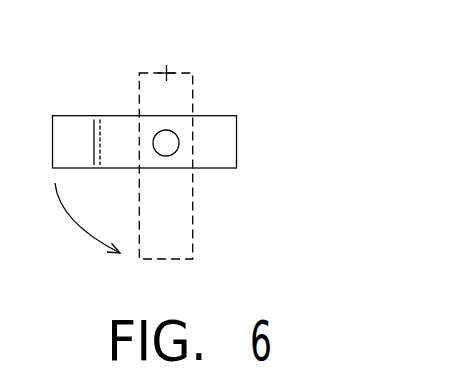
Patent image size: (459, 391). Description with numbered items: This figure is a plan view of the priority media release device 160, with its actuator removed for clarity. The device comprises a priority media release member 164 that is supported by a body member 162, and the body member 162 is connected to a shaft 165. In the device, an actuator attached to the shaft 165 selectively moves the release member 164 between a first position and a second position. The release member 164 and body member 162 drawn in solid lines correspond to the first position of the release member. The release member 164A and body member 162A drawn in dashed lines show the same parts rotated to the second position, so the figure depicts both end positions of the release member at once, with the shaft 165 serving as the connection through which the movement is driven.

The priority media release device 160 is at (219, 136).
The body member 162 is at (223, 124).
The body member in second position 162A is at (168, 60).
The priority media release member 164 is at (78, 122).
The release member in second position 164A is at (185, 222).
The shaft 165 is at (178, 146).